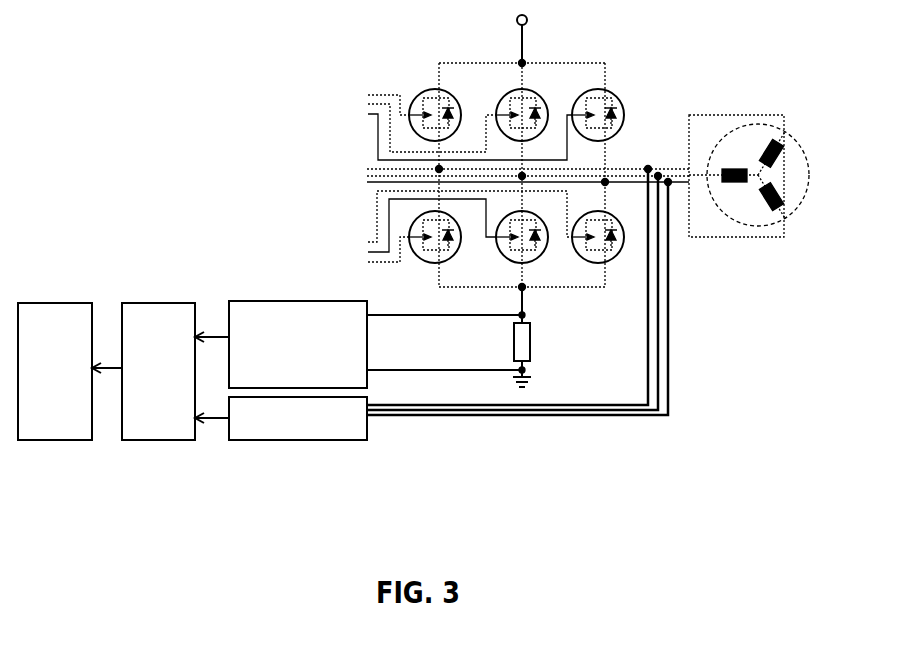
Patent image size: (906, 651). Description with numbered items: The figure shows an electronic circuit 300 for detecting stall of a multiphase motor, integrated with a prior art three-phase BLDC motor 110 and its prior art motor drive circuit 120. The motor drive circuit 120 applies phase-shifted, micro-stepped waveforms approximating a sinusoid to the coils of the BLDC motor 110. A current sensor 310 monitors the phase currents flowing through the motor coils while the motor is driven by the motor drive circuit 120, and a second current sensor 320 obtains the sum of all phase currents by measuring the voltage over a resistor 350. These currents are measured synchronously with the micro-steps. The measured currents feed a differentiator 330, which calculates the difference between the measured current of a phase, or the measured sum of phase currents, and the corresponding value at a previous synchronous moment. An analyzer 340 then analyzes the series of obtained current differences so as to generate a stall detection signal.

The BLDC motor 110 is at (754, 100).
The motor drive circuit 120 is at (368, 82).
The electronic circuit 300 is at (92, 238).
The current sensor 310 is at (285, 442).
The current sensor 320 is at (282, 300).
The differentiator 330 is at (162, 442).
The analyzer 340 is at (63, 442).
The resistor 350 is at (514, 352).